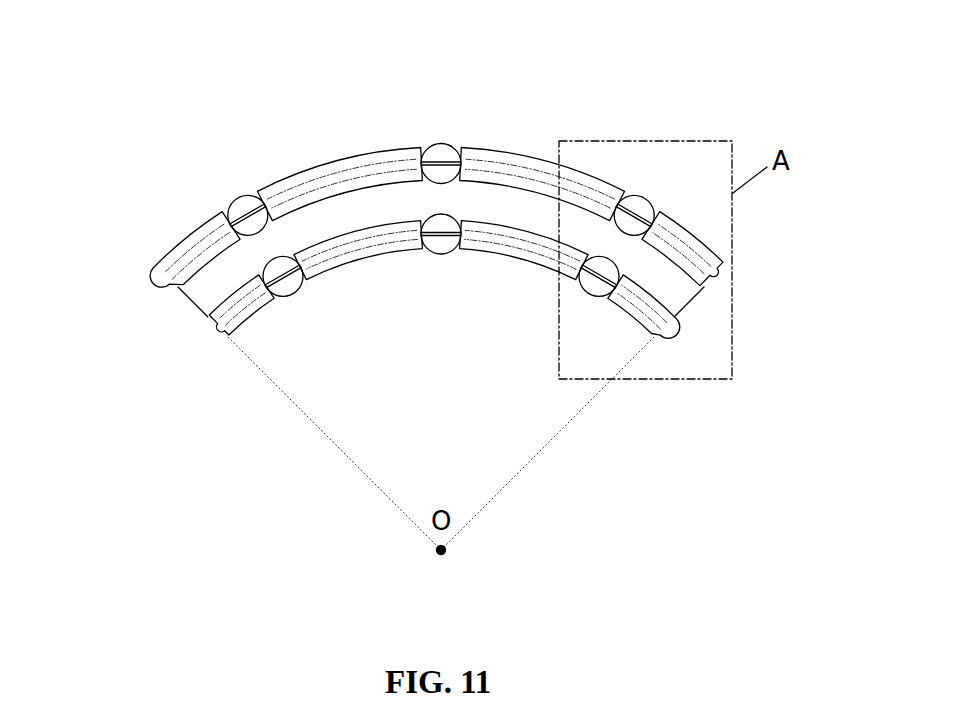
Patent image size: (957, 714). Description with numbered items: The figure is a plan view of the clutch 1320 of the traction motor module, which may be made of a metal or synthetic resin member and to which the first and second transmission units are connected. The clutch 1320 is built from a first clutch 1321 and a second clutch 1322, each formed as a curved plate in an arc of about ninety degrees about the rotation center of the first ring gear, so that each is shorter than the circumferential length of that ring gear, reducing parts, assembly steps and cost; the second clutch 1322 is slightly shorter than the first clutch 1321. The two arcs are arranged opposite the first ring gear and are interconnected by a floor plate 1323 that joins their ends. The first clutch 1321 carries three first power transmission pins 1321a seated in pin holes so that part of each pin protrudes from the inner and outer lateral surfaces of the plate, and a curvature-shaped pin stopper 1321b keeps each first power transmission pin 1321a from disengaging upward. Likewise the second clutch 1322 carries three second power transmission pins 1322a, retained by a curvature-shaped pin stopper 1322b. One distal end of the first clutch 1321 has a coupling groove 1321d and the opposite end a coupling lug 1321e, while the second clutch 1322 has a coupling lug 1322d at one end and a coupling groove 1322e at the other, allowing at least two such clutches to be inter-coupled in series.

The clutch 1320 is at (282, 101).
The first clutch 1321 is at (523, 153).
The first power transmission pin 1321a is at (444, 143).
The pin stopper 1321b is at (388, 162).
The coupling groove 1321d is at (718, 270).
The coupling lug 1321e is at (158, 278).
The second clutch 1322 is at (345, 275).
The second power transmission pin 1322a is at (443, 252).
The pin stopper 1322b is at (530, 250).
The coupling lug 1322d is at (673, 337).
The coupling groove 1322e is at (222, 327).
The floor plate 1323 is at (192, 302).